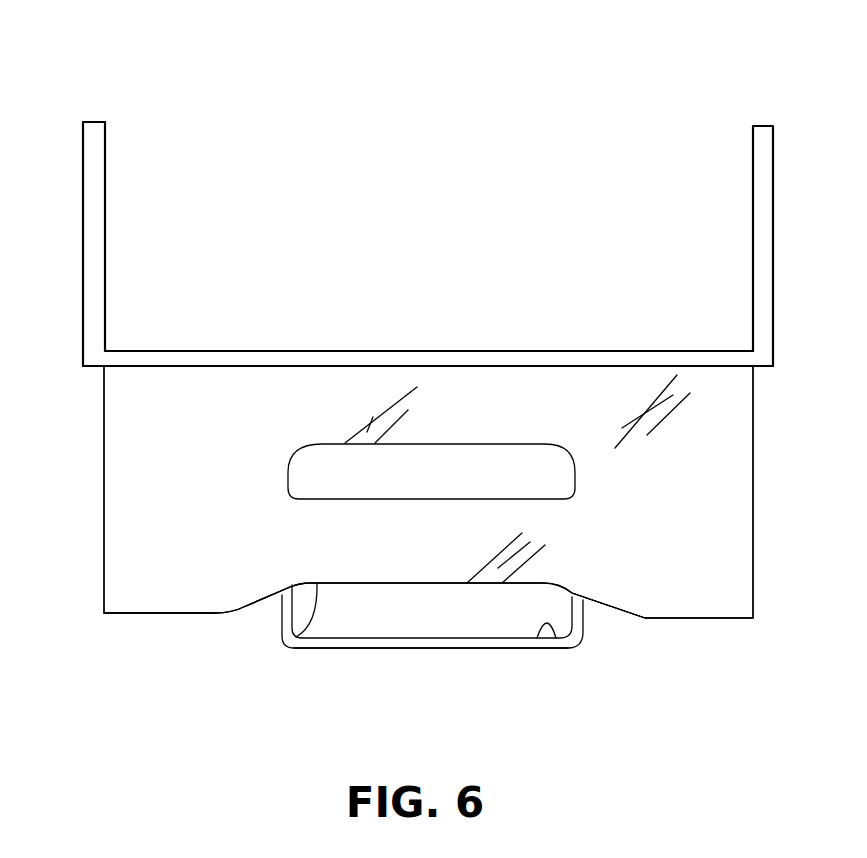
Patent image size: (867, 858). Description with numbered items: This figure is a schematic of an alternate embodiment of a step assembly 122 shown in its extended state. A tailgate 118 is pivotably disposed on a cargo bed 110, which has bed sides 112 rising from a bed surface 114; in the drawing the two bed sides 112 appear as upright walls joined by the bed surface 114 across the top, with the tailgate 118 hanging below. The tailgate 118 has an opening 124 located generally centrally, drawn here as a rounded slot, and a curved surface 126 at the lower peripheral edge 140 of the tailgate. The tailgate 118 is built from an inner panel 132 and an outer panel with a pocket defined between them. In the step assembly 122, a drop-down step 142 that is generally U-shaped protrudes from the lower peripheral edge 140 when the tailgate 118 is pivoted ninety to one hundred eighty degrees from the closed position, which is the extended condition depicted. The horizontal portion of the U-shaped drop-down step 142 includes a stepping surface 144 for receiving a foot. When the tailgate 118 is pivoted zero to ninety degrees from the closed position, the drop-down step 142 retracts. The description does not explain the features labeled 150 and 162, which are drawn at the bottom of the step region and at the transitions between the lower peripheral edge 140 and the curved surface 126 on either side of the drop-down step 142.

The cargo bed 110 is at (412, 206).
The bed sides 112 is at (98, 157).
The bed surface 114 is at (210, 355).
The tailgate 118 is at (133, 407).
The step assembly 122 is at (440, 676).
The opening 124 is at (437, 455).
The curved surface 126 is at (290, 643).
The inner panel 132 is at (145, 465).
The lower peripheral edge 140 is at (140, 615).
The drop-down step 142 is at (463, 645).
The stepping surface 144 is at (557, 640).
The pocket bottom 150 is at (385, 643).
The transition 162 is at (278, 608).